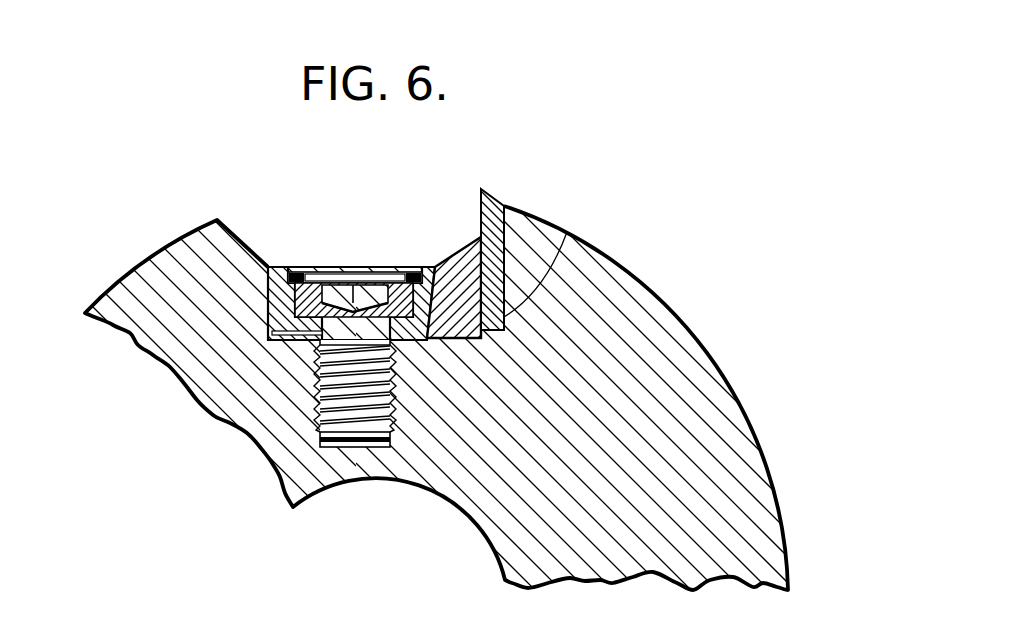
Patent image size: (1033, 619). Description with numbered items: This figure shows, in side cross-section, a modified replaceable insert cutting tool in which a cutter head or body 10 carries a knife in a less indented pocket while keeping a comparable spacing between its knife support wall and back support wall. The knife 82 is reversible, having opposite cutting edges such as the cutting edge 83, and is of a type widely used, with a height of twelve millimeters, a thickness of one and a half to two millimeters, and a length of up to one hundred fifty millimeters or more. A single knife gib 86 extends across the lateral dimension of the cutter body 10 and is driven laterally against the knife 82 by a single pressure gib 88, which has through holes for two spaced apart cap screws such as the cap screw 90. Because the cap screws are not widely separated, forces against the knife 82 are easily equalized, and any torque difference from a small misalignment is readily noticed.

The cutter head or body 10 is at (427, 500).
The knife 82 is at (497, 200).
The cutting edge 83 is at (556, 253).
The knife gib 86 is at (462, 243).
The pressure gib 88 is at (428, 267).
The cap screw 90 is at (348, 270).